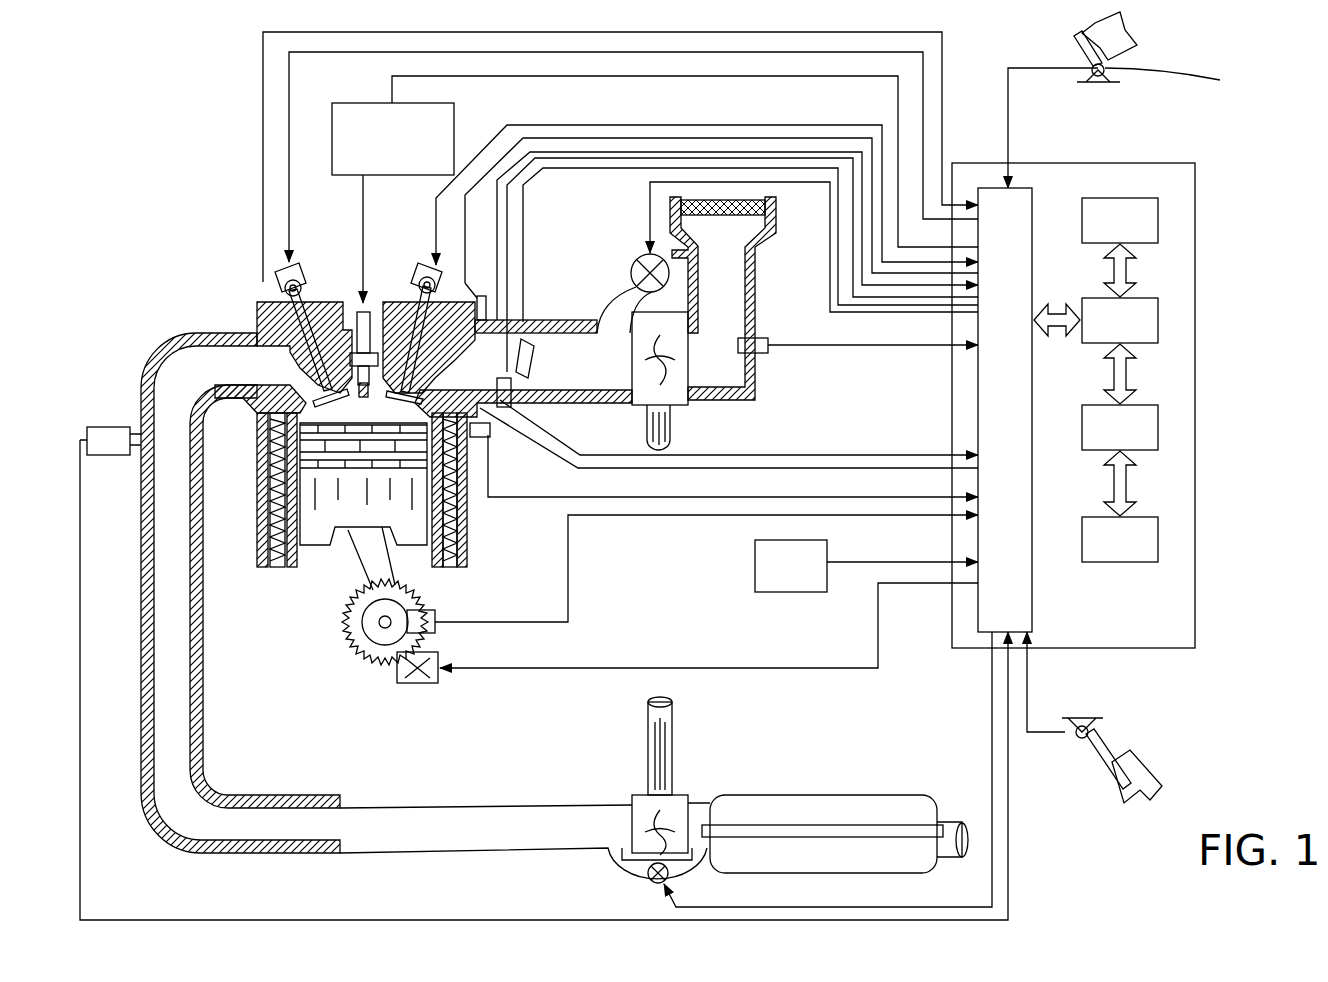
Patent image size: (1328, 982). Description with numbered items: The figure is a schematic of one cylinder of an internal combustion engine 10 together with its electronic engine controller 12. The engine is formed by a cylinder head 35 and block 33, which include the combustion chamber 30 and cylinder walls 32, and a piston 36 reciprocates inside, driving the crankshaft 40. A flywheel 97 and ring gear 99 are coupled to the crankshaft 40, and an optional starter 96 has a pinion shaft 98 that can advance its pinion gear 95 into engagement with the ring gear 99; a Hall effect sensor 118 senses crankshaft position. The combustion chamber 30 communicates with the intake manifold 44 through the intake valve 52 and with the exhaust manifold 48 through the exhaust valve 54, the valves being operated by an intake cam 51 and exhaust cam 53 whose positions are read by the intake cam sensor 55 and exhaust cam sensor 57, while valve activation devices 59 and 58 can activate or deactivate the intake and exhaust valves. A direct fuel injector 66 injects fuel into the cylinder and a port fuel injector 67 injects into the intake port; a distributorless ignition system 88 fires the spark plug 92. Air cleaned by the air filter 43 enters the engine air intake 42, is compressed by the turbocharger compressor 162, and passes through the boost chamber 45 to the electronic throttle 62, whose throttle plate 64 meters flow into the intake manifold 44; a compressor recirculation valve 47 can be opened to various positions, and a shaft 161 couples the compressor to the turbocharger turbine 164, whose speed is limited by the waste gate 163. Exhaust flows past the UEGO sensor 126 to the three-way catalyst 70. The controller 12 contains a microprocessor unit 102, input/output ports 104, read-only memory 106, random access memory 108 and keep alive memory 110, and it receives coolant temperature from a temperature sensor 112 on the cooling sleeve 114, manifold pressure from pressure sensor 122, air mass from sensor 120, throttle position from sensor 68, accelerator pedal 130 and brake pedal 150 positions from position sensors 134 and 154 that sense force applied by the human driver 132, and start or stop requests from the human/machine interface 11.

The internal combustion engine 10 is at (185, 248).
The human/machine interface 11 is at (791, 566).
The electronic engine controller 12 is at (1195, 165).
The combustion chamber 30 is at (268, 520).
The cylinder walls 32 is at (300, 570).
The block 33 is at (258, 452).
The cylinder head 35 is at (258, 305).
The piston 36 is at (345, 508).
The crankshaft 40 is at (380, 650).
The engine air intake 42 is at (578, 215).
The air filter 43 is at (745, 218).
The intake manifold 44 is at (535, 348).
The boost chamber 45 is at (592, 362).
The compressor recirculation valve 47 is at (640, 258).
The exhaust manifold 48 is at (240, 593).
The intake cam 51 is at (430, 268).
The intake valve 52 is at (420, 364).
The exhaust cam 53 is at (297, 266).
The exhaust valve 54 is at (285, 355).
The intake cam sensor 55 is at (440, 290).
The exhaust cam sensor 57 is at (280, 292).
The valve activation device 58 is at (318, 280).
The valve activation device 59 is at (422, 288).
The electronic throttle 62 is at (534, 358).
The throttle plate 64 is at (518, 374).
The direct fuel injector 66 is at (488, 437).
The port fuel injector 67 is at (482, 301).
The throttle position sensor 68 is at (510, 320).
The three-way catalyst 70 is at (750, 795).
The distributorless ignition system 88 is at (455, 113).
The spark plug 92 is at (363, 300).
The pinion gear 95 is at (428, 685).
The starter 96 is at (436, 680).
The flywheel 97 is at (357, 628).
The pinion shaft 98 is at (405, 683).
The ring gear 99 is at (372, 665).
The microprocessor unit 102 is at (1160, 320).
The input/output ports 104 is at (1032, 198).
The read-only memory 106 is at (1160, 215).
The random access memory 108 is at (1160, 427).
The keep alive memory 110 is at (1160, 537).
The temperature sensor 112 is at (515, 483).
The cooling sleeve 114 is at (455, 505).
The Hall effect sensor 118 is at (436, 612).
The air mass sensor 120 is at (765, 340).
The pressure sensor 122 is at (512, 402).
The UEGO sensor 126 is at (88, 432).
The accelerator pedal 130 is at (1085, 48).
The human driver 132 is at (1130, 30).
The position sensor 134 is at (1186, 88).
The brake pedal 150 is at (1112, 785).
The position sensor 154 is at (1065, 725).
The shaft 161 is at (647, 430).
The turbocharger compressor 162 is at (672, 405).
The waste gate 163 is at (655, 884).
The turbocharger turbine 164 is at (633, 800).